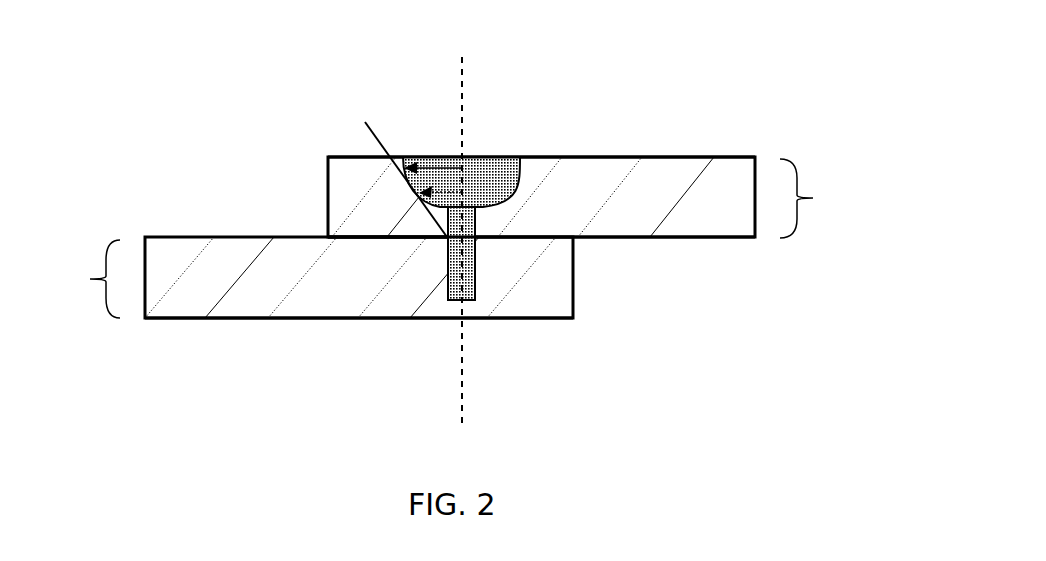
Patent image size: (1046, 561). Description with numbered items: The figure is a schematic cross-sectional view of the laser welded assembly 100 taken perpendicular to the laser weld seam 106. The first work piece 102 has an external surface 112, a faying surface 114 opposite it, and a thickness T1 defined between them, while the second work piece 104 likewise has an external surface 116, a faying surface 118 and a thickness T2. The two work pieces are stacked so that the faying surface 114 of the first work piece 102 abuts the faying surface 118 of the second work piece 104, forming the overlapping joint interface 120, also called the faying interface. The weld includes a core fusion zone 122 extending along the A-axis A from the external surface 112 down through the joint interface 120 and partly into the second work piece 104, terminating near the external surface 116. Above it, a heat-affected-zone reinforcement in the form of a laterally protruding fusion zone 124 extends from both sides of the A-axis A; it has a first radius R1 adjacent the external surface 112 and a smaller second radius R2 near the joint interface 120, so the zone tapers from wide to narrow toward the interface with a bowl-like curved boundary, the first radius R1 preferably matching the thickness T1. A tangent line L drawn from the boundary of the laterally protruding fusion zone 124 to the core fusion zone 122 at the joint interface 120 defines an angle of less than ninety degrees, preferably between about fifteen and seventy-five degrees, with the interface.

The laser welded assembly 100 is at (501, 240).
The first work piece 102 is at (660, 175).
The second work piece 104 is at (203, 300).
The laser weld seam 106 is at (519, 189).
The external surface of the first work piece 112 is at (350, 157).
The faying surface of the first work piece 114 is at (537, 238).
The external surface of the second work piece 116 is at (302, 318).
The faying surface of the second work piece 118 is at (362, 232).
The overlapping joint interface 120 is at (405, 246).
The core fusion zone 122 is at (475, 262).
The laterally protruding fusion zone 124 is at (499, 178).
The A-axis A is at (462, 426).
The tangent line L is at (378, 132).
The first radius R1 is at (433, 157).
The second radius R2 is at (463, 178).
The thickness of the first work piece T1 is at (821, 198).
The thickness of the second work piece T2 is at (82, 279).